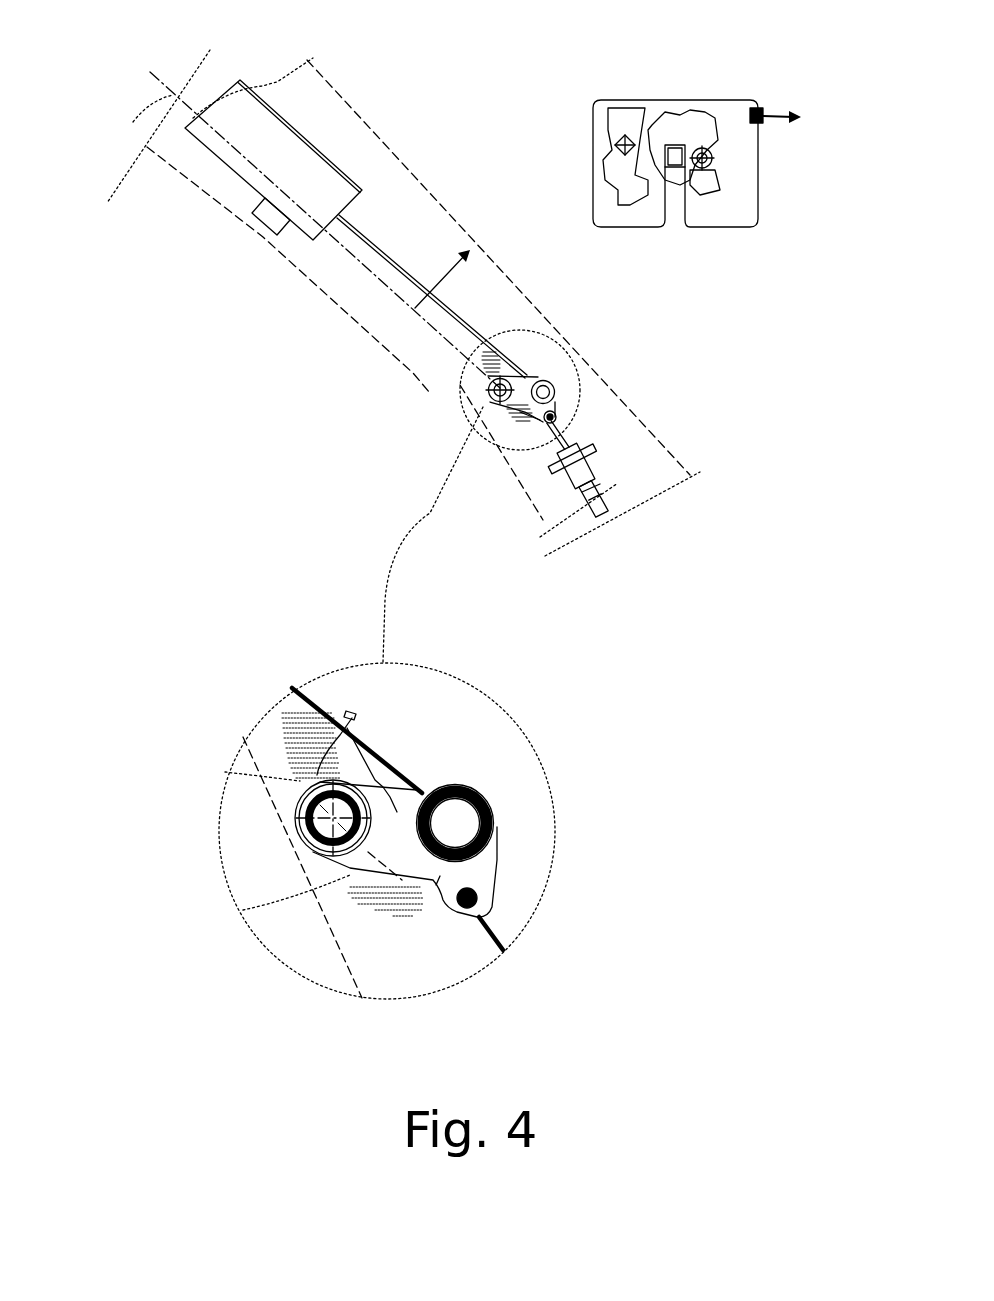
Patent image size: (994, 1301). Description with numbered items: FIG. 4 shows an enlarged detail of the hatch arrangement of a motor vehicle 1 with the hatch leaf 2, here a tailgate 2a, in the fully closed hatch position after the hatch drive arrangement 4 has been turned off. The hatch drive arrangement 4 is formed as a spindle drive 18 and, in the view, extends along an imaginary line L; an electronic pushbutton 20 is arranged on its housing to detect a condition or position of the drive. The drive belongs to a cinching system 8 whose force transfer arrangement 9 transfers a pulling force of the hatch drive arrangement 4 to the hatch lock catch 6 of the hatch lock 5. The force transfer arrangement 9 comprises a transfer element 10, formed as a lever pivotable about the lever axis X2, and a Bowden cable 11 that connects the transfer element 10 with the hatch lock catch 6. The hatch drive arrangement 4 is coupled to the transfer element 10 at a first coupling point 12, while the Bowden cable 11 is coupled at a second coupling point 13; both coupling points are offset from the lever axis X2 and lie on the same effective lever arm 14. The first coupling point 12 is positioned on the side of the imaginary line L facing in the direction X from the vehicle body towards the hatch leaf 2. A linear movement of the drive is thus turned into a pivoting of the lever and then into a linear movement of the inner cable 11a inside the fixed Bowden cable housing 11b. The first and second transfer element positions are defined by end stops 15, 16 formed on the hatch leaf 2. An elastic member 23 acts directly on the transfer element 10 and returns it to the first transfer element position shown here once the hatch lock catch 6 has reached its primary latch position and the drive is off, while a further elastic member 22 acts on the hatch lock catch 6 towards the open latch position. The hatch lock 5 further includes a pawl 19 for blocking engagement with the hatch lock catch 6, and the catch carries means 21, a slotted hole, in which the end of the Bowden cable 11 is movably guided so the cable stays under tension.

The motor vehicle 1 is at (190, 47).
The hatch leaf 2 is at (423, 308).
The tailgate 2a is at (437, 197).
The hatch drive arrangement 4 is at (207, 171).
The spindle drive 18 is at (178, 236).
The hatch lock 5 is at (606, 84).
The hatch lock catch 6 is at (715, 183).
The cinching system 8 is at (718, 325).
The force transfer arrangement 9 is at (642, 455).
The transfer element 10 is at (557, 402).
The Bowden cable 11 is at (792, 112).
The inner cable 11a is at (567, 437).
The Bowden cable housing 11b is at (600, 490).
The first coupling point 12 is at (543, 380).
The second coupling point 13 is at (556, 413).
The effective lever arm 14 is at (397, 812).
The end stop 15 is at (553, 404).
The end stop 16 is at (507, 378).
The pawl 19 is at (600, 160).
The electronic pushbutton 20 is at (272, 228).
The means for movably attaching the Bowden cable 21 is at (680, 97).
The elastic member 22 is at (713, 160).
The elastic member 23 is at (365, 868).
The imaginary line L is at (210, 126).
The direction X is at (445, 275).
The lever axis X2 is at (488, 389).